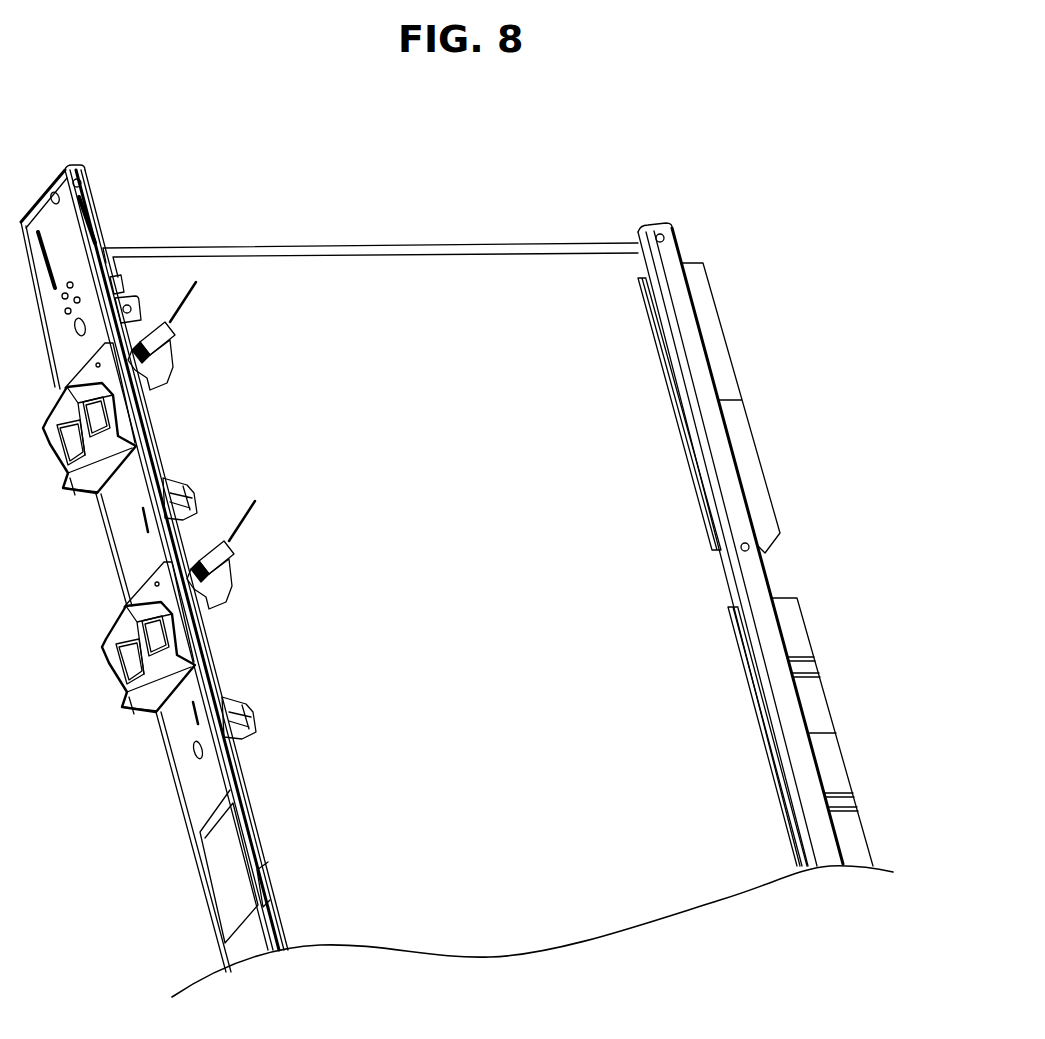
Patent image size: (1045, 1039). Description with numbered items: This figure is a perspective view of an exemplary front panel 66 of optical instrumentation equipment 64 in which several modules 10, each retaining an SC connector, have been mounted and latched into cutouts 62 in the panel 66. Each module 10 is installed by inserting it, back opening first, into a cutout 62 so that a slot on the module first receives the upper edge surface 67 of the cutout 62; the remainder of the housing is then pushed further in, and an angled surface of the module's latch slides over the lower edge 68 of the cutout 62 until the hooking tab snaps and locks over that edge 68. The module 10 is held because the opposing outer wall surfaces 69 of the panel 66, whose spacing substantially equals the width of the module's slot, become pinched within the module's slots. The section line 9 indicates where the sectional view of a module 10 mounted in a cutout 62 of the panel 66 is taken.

The section line 9- 9 is at (146, 756).
The module 10 is at (190, 636).
The cutout 62 is at (213, 843).
The optical instrumentation equipment 64 is at (238, 270).
The front panel 66 is at (40, 190).
The upper edge surface 67 is at (253, 737).
The lower edge 68 is at (258, 878).
The outer wall surfaces 69 is at (63, 340).